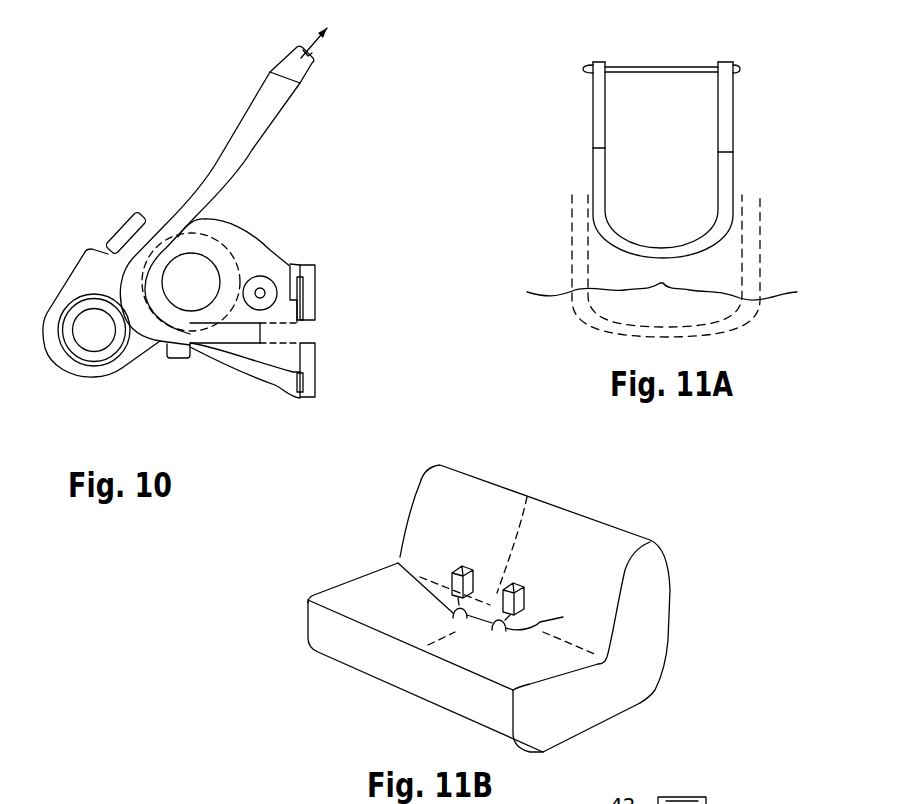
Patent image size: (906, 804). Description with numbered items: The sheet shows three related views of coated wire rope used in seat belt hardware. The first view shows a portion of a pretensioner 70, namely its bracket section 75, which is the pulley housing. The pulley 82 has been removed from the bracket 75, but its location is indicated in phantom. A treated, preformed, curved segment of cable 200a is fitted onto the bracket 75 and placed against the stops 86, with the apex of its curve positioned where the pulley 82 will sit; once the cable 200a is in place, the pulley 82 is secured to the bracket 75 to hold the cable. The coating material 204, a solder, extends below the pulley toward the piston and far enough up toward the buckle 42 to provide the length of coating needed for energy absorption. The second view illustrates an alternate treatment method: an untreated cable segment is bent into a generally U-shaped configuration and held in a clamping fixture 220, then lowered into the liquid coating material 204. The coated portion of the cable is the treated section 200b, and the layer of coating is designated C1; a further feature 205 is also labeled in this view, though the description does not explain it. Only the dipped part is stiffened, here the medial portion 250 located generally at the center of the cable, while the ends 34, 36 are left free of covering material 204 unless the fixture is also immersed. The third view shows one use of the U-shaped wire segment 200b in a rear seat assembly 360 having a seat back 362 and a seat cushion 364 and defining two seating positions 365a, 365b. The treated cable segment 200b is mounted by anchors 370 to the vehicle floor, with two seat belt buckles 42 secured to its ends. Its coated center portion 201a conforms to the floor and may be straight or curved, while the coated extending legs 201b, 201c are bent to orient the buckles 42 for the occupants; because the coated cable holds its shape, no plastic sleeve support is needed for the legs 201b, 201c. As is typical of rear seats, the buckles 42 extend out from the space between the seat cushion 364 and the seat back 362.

In FIG. 10, the seat belt buckle 42 is at (328, 32).
In FIG. 11B, the seat belt buckle 42 is at (459, 567).
In FIG. 10, the pretensioner 70 is at (306, 246).
In FIG. 10, the bracket section 75 is at (114, 362).
In FIG. 10, the pulley 82 is at (232, 258).
In FIG. 10, the stops 86 is at (125, 228).
In FIG. 10, the preformed curved cable segment 200a is at (216, 228).
In FIG. 11A, the treated cable portion 200b is at (614, 160).
In FIG. 11B, the treated cable portion 200b is at (480, 652).
In FIG. 10, the coating material 204 is at (226, 147).
In FIG. 11A, the coating material 204 is at (747, 298).
In FIG. 11A, the bar 205 is at (710, 127).
In FIG. 11A, the clamping fixture 220 is at (623, 66).
In FIG. 11A, the medial portion 250 is at (659, 250).
In FIG. 11A, the wire segment end 34 is at (724, 92).
In FIG. 11A, the wire segment end 36 is at (592, 87).
In FIG. 11A, the layer of coating C1 is at (725, 166).
In FIG. 11B, the rear seat assembly 360 is at (481, 590).
In FIG. 11B, the seat back 362 is at (442, 503).
In FIG. 11B, the seat cushion 364 is at (358, 597).
In FIG. 11B, the seating position 365a is at (474, 632).
In FIG. 11B, the seating position 365b is at (403, 615).
In FIG. 11B, the anchors 370 is at (448, 618).
In FIG. 11B, the coated center portion 201a is at (493, 627).
In FIG. 11B, the coated extending leg 201b is at (398, 563).
In FIG. 11B, the coated extending leg 201c is at (556, 636).